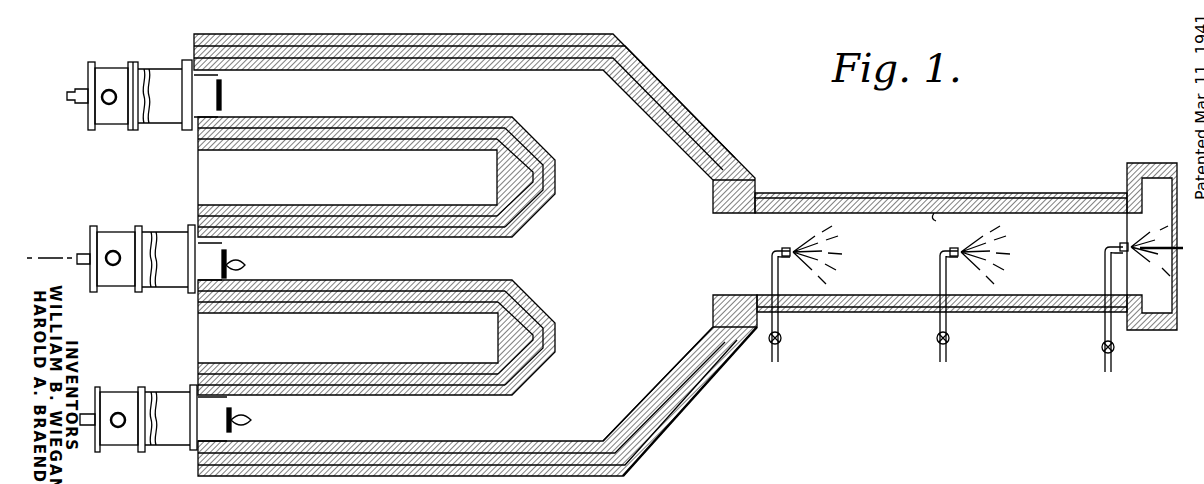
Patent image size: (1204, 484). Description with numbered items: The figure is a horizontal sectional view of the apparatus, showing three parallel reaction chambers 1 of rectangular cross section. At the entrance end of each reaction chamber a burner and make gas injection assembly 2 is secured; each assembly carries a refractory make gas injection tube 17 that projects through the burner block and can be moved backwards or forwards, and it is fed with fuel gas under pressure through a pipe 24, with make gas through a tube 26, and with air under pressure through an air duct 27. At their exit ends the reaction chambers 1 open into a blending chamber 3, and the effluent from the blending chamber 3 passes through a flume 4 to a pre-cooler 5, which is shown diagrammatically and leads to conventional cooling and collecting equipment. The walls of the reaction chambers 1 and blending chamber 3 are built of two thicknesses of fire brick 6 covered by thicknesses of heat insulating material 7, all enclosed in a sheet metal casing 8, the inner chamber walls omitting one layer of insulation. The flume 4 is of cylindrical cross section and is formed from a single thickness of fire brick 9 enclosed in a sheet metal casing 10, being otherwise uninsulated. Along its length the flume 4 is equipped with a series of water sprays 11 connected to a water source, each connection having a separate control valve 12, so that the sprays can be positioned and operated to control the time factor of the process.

The reaction chamber 1 is at (313, 108).
The burner and make gas injection assembly 2 is at (170, 245).
The blending chamber 3 is at (688, 170).
The flume 4 is at (868, 217).
The pre-cooler 5 is at (1160, 190).
The fire brick 6 is at (668, 392).
The heat insulating material 7 is at (703, 391).
The sheet metal casing 8 is at (673, 417).
The fire brick 9 is at (934, 216).
The sheet metal casing 10 is at (1003, 194).
The water spray 11 is at (937, 278).
The control valve 12 is at (782, 339).
The make gas injection tube 17 is at (243, 257).
The fuel gas pipe 24 is at (85, 252).
The make gas supply tube 26 is at (77, 258).
The air duct 27 is at (111, 106).